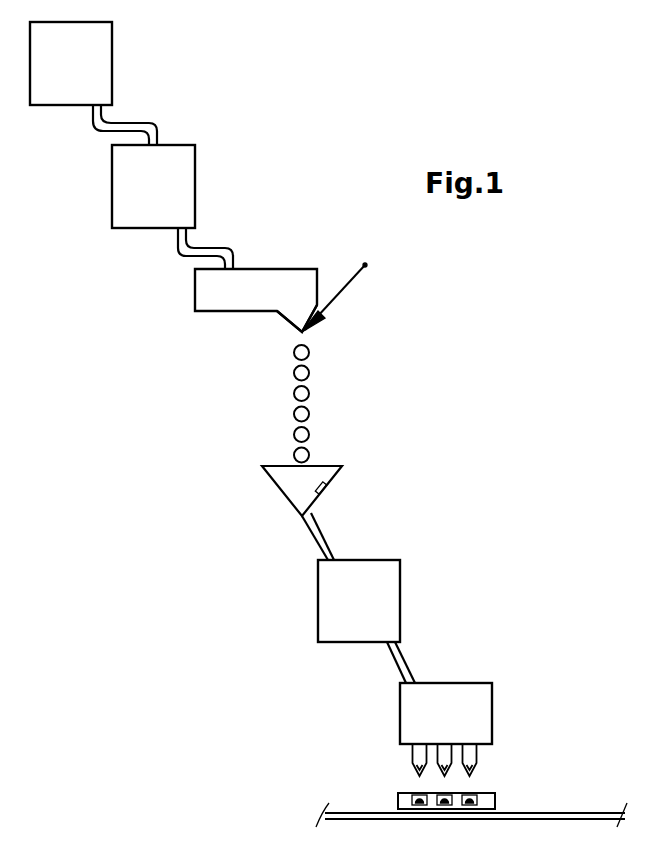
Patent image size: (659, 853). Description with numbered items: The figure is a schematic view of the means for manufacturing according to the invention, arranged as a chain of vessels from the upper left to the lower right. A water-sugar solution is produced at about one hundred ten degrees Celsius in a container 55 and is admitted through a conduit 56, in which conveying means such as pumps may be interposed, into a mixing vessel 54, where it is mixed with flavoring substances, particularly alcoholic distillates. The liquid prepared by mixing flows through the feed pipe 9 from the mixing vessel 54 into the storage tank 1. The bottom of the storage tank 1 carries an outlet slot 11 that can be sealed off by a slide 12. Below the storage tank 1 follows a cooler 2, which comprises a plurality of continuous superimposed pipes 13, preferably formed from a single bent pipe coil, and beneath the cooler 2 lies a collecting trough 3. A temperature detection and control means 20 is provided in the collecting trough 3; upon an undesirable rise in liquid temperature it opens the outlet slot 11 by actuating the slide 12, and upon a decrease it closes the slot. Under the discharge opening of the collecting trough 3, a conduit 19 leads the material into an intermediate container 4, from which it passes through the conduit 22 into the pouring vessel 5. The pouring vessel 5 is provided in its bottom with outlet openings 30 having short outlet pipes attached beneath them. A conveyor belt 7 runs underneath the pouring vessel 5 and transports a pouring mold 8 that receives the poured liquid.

The container 55 is at (103, 48).
The conduit 56 is at (119, 114).
The mixing vessel 54 is at (184, 165).
The feed pipe 9 is at (215, 248).
The storage tank 1 is at (290, 278).
The outlet slot 11 is at (289, 321).
The slide 12 is at (312, 328).
The cooler 2 is at (273, 394).
The pipes 13 is at (301, 413).
The collecting trough 3 is at (282, 484).
The temperature detection and control means 20 is at (328, 490).
The conduit 19 is at (322, 537).
The intermediate container 4 is at (326, 583).
The conduit 22 is at (399, 660).
The pouring vessel 5 is at (458, 690).
The outlet openings 30 is at (469, 757).
The pouring mold 8 is at (401, 799).
The conveyor belt 7 is at (566, 813).